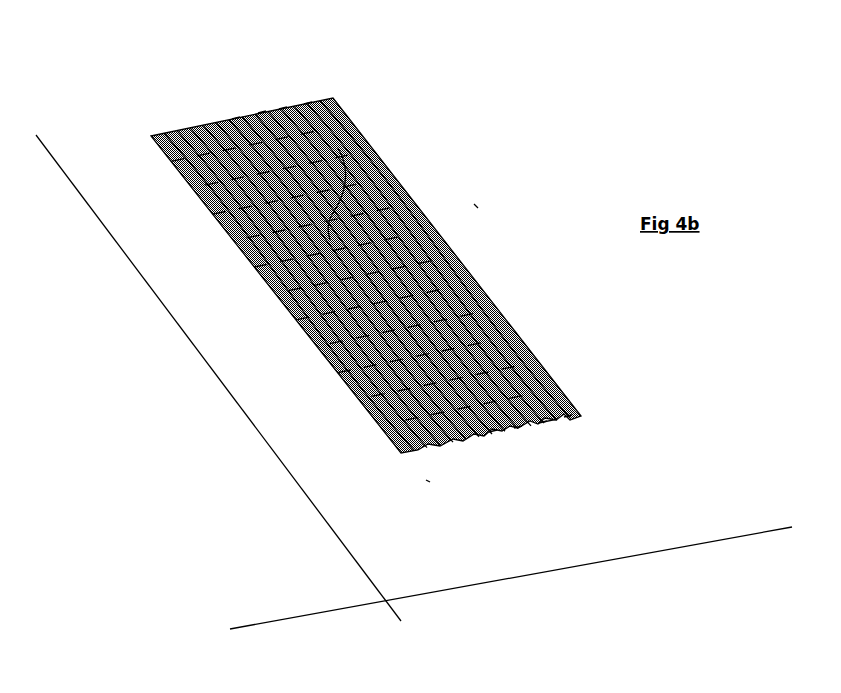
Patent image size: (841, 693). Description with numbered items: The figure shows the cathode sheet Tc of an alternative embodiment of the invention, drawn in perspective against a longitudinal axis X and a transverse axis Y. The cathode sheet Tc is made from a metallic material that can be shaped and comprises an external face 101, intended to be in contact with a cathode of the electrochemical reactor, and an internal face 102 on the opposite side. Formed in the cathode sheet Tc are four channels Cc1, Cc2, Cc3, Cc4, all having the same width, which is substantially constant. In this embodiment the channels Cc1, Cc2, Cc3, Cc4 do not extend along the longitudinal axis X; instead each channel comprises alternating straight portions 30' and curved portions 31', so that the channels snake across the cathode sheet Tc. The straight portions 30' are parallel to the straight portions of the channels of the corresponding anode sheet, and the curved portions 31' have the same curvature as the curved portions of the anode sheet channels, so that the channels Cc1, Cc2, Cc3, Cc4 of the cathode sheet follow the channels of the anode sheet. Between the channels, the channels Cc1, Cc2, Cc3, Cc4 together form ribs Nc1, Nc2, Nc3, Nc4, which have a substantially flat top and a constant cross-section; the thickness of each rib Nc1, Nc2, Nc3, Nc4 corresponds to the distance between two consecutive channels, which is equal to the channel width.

The longitudinal axis X is at (50, 152).
The Y axis Y is at (708, 536).
The external face 101 is at (449, 286).
The internal face 102 is at (421, 478).
The cathode sheet Tc is at (471, 192).
The straight portions 30' is at (367, 261).
The curved portions 31' is at (372, 177).
The channel Cc1 is at (228, 108).
The channel Cc2 is at (254, 102).
The channel Cc3 is at (275, 104).
The channel Cc4 is at (300, 99).
The rib Nc1 is at (485, 428).
The rib Nc2 is at (510, 424).
The rib Nc3 is at (535, 419).
The rib Nc4 is at (560, 412).